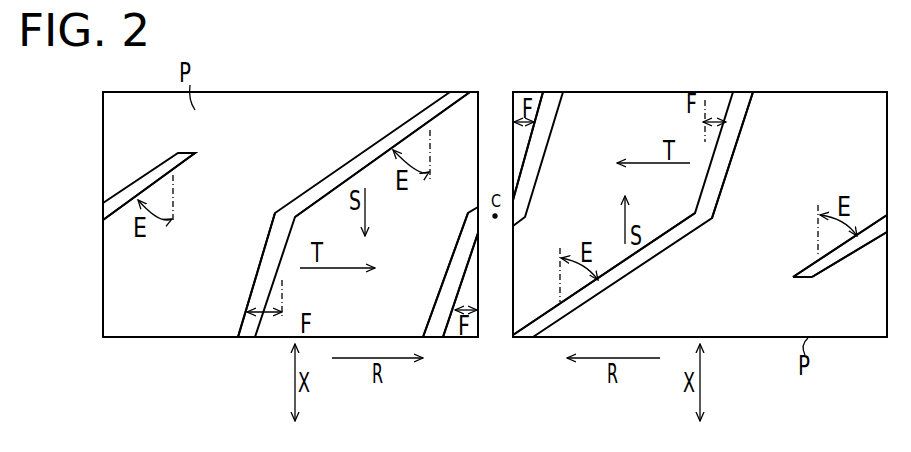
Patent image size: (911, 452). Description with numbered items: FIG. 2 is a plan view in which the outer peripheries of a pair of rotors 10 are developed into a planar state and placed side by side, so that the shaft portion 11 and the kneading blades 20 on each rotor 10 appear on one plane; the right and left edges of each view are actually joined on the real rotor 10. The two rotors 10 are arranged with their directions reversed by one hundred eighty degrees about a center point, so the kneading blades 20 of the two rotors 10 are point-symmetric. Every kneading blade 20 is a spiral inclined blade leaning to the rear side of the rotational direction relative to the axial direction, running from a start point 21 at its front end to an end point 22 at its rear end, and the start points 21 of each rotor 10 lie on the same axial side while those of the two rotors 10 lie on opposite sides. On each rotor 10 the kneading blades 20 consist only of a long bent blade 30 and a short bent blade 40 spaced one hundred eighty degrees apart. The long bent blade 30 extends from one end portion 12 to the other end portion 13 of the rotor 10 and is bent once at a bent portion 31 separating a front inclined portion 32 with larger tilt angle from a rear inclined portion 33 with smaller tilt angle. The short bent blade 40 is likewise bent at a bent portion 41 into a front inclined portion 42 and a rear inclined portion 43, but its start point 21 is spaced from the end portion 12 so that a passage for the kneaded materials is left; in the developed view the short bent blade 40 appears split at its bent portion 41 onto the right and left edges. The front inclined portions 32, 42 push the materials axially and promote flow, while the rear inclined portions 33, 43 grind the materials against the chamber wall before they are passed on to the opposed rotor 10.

The rotor 10 is at (358, 91).
The shaft portion 11 is at (222, 110).
The one end portion 12 is at (286, 91).
The other end portion 13 is at (165, 338).
The kneading blade 20 is at (433, 308).
The start point 21 is at (165, 110).
The end point 22 is at (252, 338).
The long bent blade 30 is at (318, 181).
The bent portion 31 is at (287, 213).
The front inclined portion 32 is at (362, 162).
The rear inclined portion 33 is at (270, 250).
The short bent blade 40 is at (130, 190).
The bent portion 41 is at (470, 211).
The front inclined portion 42 is at (162, 172).
The rear inclined portion 43 is at (450, 262).